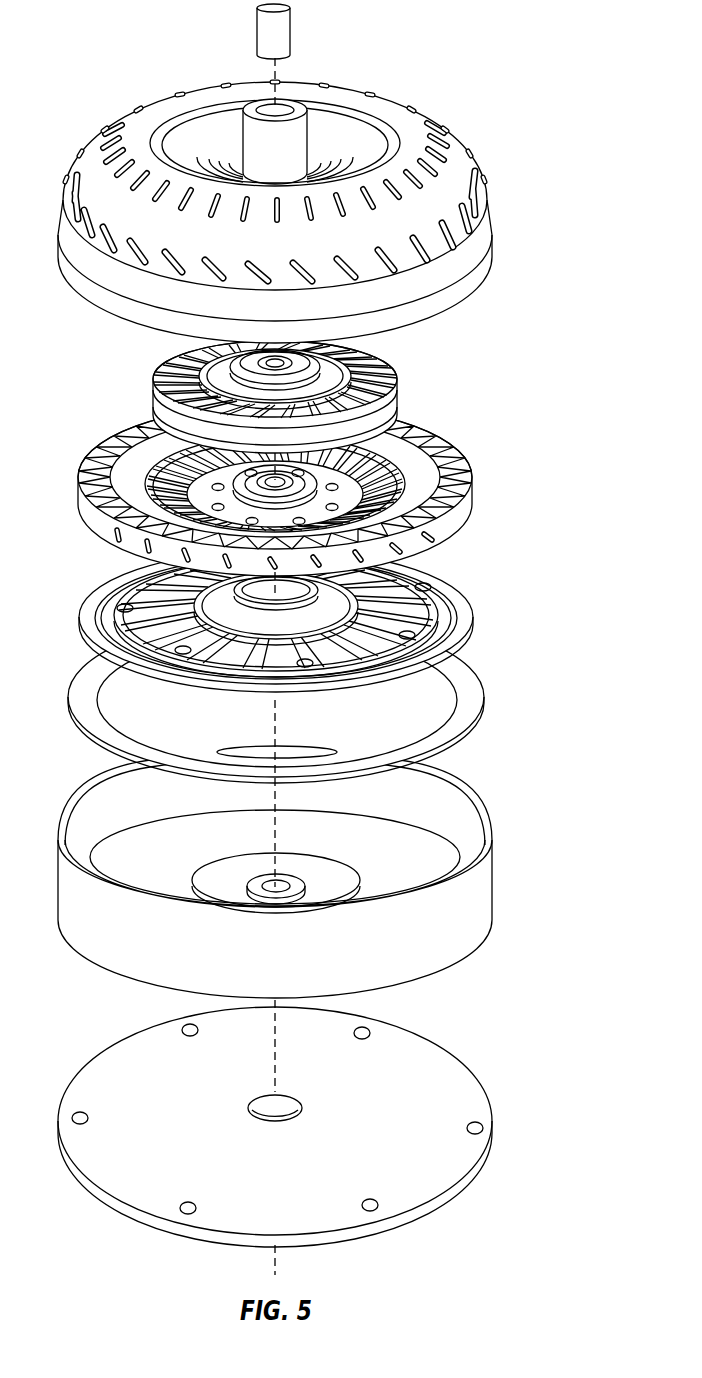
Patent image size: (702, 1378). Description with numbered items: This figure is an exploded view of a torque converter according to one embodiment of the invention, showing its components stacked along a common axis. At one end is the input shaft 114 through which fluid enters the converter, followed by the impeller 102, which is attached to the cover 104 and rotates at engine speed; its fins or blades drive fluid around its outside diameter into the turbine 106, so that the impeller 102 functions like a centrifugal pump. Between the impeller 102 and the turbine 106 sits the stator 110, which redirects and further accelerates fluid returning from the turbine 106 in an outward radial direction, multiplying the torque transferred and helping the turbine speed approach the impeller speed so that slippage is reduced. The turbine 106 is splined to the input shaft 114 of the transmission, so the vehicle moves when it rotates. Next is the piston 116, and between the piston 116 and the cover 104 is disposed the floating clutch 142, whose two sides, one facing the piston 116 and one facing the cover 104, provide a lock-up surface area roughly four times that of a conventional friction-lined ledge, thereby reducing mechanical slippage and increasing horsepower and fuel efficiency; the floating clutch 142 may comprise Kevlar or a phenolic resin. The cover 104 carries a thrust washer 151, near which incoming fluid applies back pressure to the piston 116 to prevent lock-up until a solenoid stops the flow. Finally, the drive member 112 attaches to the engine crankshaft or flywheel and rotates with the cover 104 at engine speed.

The impeller/pump 102 is at (462, 170).
The cover 104 is at (314, 874).
The turbine 106 is at (420, 542).
The stator 110 is at (390, 398).
The drive member 112 is at (447, 1071).
The input shaft 114 is at (285, 36).
The piston 116 is at (462, 608).
The floating clutch 142 is at (473, 697).
The thrust washer 151 is at (360, 905).